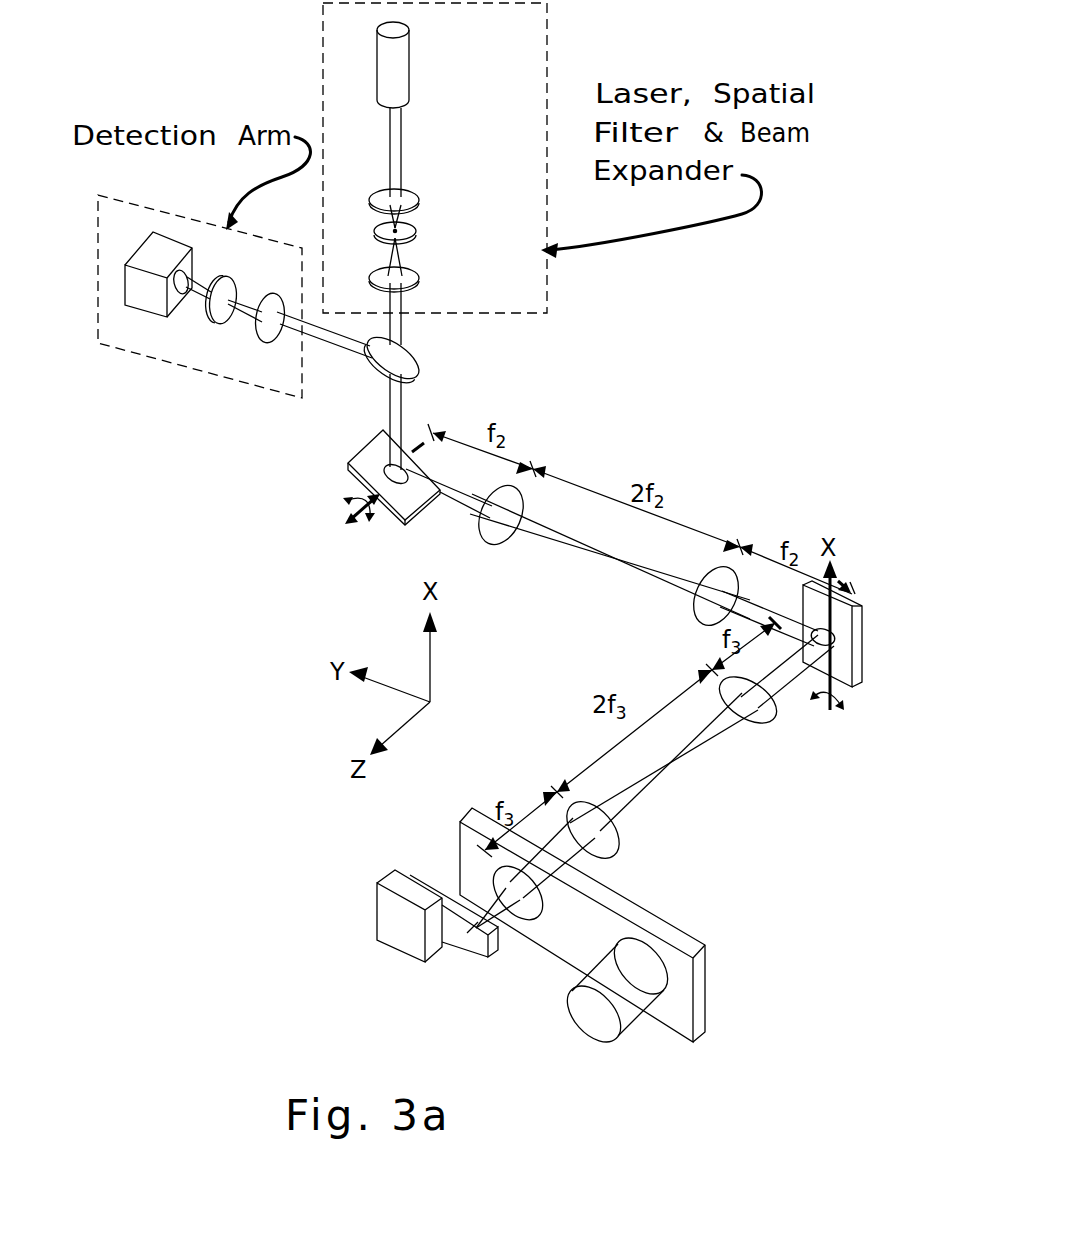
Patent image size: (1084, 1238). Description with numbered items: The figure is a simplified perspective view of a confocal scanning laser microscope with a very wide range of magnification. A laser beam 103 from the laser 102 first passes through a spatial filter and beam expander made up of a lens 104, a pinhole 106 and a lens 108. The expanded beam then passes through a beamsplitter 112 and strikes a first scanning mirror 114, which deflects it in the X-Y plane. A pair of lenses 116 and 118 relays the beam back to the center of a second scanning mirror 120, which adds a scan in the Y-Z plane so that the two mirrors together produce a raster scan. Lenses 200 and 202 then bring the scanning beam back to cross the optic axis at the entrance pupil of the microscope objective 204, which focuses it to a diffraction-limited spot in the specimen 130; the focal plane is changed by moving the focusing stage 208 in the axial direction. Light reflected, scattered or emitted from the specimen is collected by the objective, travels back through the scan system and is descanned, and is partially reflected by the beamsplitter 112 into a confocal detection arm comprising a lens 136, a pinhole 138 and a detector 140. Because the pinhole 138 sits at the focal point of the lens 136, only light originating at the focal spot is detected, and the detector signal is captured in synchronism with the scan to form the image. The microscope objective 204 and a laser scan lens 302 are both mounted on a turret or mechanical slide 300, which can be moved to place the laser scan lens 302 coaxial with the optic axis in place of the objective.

The laser 102 is at (409, 78).
The laser beam 103 is at (401, 152).
The lens 104 is at (420, 198).
The pinhole 106 is at (416, 230).
The lens 108 is at (420, 280).
The beamsplitter 112 is at (420, 365).
The first scanning mirror 114 is at (358, 450).
The lens 116 is at (508, 536).
The lens 118 is at (697, 607).
The second scanning mirror 120 is at (865, 645).
The specimen 130 is at (493, 958).
The lens 136 is at (272, 338).
The pinhole 138 is at (224, 323).
The detector 140 is at (153, 316).
The lens 200 is at (754, 724).
The lens 202 is at (608, 857).
The microscope objective 204 is at (493, 884).
The focusing stage 208 is at (376, 914).
The turret or mechanical slide 300 is at (700, 978).
The laser scan lens 302 is at (613, 1040).